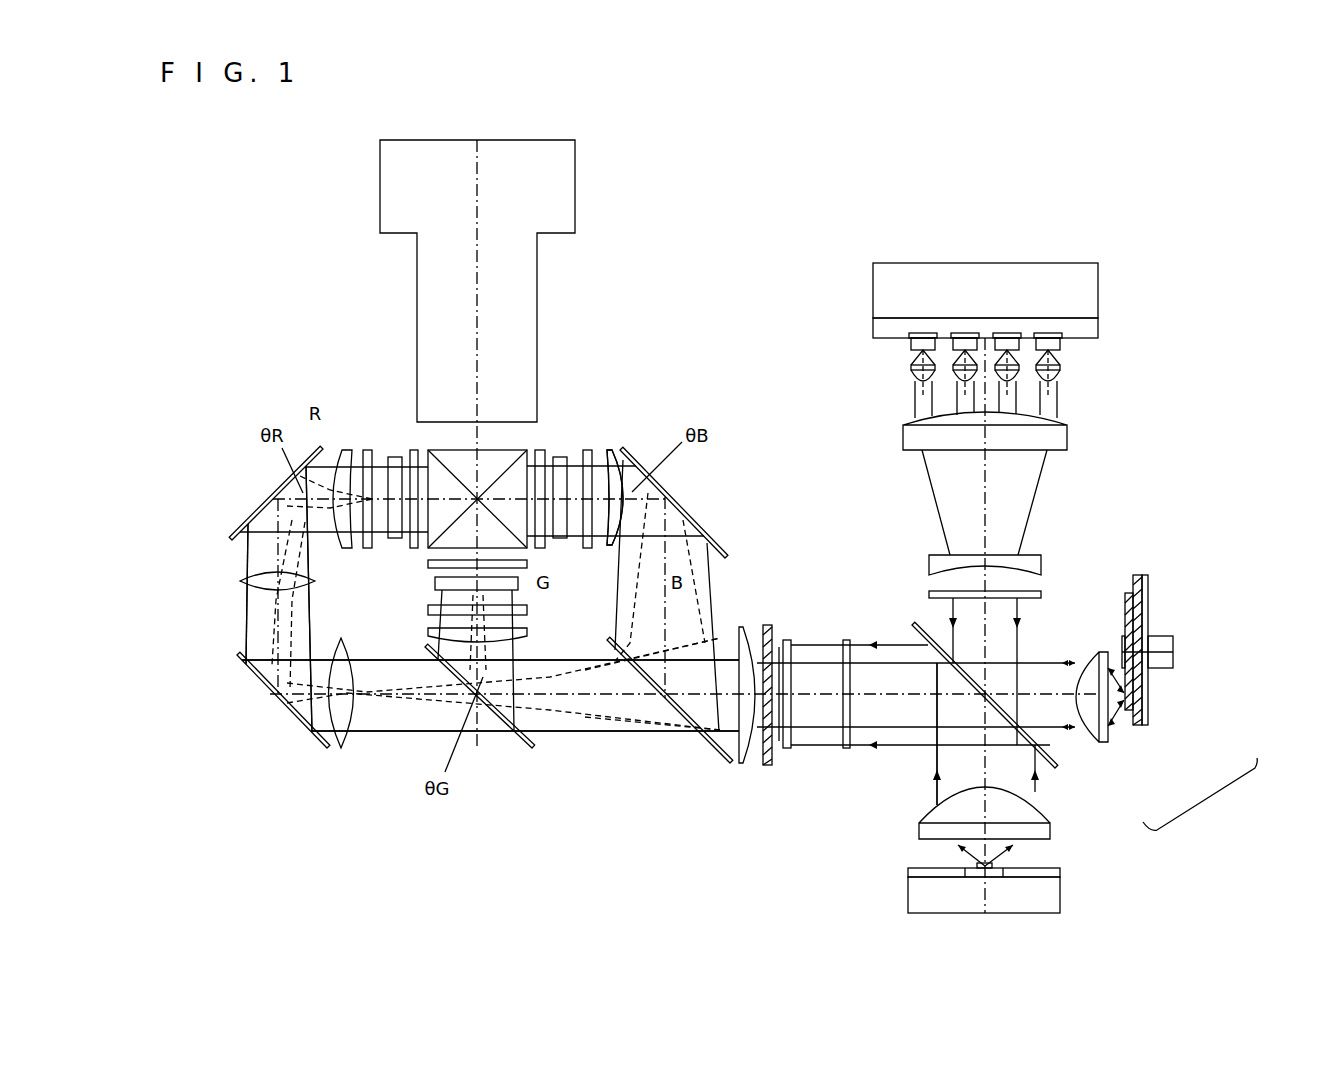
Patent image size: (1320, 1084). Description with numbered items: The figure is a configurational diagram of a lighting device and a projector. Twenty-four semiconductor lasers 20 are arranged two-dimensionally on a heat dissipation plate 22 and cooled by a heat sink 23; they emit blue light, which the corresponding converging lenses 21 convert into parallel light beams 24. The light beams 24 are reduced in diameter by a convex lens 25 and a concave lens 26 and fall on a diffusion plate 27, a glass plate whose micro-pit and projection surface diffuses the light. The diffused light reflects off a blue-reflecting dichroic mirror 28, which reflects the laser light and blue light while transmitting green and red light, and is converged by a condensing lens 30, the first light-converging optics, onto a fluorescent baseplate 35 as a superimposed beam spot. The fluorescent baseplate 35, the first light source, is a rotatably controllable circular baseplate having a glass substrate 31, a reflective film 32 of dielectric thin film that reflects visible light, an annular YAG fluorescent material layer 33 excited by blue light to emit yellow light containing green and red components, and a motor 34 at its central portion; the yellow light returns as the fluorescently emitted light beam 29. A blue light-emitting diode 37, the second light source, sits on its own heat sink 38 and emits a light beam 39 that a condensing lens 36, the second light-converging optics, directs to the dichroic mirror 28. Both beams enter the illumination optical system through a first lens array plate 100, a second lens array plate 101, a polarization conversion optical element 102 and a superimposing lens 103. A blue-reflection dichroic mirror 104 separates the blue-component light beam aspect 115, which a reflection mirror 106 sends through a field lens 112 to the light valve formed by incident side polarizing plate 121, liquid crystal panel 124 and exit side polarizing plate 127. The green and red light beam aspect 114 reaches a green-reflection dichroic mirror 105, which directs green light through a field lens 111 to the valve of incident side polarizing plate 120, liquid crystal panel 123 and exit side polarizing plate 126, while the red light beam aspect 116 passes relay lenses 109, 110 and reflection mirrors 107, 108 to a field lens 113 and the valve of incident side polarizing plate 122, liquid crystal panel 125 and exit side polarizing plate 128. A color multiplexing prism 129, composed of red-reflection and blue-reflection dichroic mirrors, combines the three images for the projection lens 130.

The semiconductor laser 20 is at (907, 346).
The converging lens 21 is at (907, 380).
The heat dissipation plate 22 is at (877, 330).
The heat sink 23 is at (885, 283).
The light beam from the semiconductor laser 24 is at (910, 398).
The convex lens 25 is at (907, 443).
The concave lens 26 is at (927, 560).
The diffusion plate 27 is at (927, 598).
The blue-reflecting dichroic mirror 28 is at (912, 626).
The light beam fluorescently emitted from the fluorescent baseplate 29 is at (1037, 663).
The condensing lens 30 is at (1092, 742).
The glass substrate 31 is at (1150, 727).
The reflective film 32 is at (1135, 727).
The fluorescent material layer 33 is at (1127, 712).
The motor 34 is at (1172, 661).
The fluorescent baseplate 35 is at (1208, 805).
The condensing lens 36 is at (918, 830).
The light-emitting diode 37 is at (993, 867).
The heat sink 38 is at (1053, 895).
The light beam from the light-emitting diode 39 is at (935, 762).
The first lens array plate 100 is at (845, 752).
The second lens array plate 101 is at (784, 750).
The polarization conversion optical element 102 is at (762, 768).
The superimposing lens 103 is at (740, 765).
The blue-reflection dichroic mirror 104 is at (704, 748).
The green-reflection dichroic mirror 105 is at (517, 745).
The reflection mirror 106 is at (698, 523).
The reflection mirror 107 is at (260, 685).
The reflection mirror 108 is at (240, 528).
The relay lens 109 is at (343, 745).
The relay lens 110 is at (245, 590).
The field lens 111 is at (428, 635).
The field lens 112 is at (606, 548).
The field lens 113 is at (346, 550).
The light beam aspect of illumination light of green and red components 114 is at (630, 735).
The light beam aspect of illumination light of a blue component 115 is at (715, 612).
The light beam aspect of illumination light of a red component 116 is at (250, 560).
The incident side polarizing plate 120 is at (530, 609).
The incident side polarizing plate 121 is at (592, 448).
The incident side polarizing plate 122 is at (368, 450).
The liquid crystal panel 123 is at (437, 592).
The liquid crystal panel 124 is at (565, 447).
The liquid crystal panel 125 is at (390, 453).
The exit side polarizing plate 126 is at (425, 566).
The exit side polarizing plate 127 is at (537, 452).
The exit side polarizing plate 128 is at (412, 452).
The color multiplexing prism 129 is at (527, 452).
The projection lens 130 is at (417, 262).